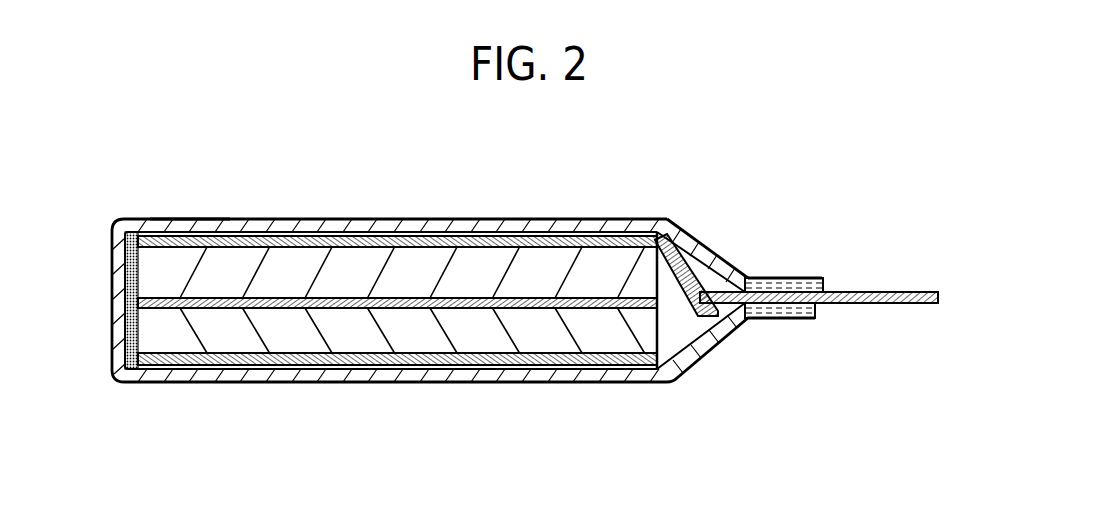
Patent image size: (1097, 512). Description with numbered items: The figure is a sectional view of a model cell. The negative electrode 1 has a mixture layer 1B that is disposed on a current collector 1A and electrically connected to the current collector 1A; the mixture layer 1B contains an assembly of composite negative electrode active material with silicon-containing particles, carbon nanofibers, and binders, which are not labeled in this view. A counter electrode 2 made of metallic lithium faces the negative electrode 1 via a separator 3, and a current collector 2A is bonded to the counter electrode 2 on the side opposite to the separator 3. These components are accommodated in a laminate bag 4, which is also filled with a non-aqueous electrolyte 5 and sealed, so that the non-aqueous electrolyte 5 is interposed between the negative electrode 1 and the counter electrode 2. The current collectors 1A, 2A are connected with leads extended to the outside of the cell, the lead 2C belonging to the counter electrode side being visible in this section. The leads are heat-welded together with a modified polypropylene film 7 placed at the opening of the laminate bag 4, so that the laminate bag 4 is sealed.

The negative electrode 1 is at (397, 326).
The current collector 1A is at (446, 340).
The mixture layer 1B is at (524, 338).
The counter electrode 2 is at (400, 260).
The current collector 2A is at (192, 219).
The lead 2C is at (914, 292).
The separator 3 is at (215, 310).
The laminate bag 4 is at (606, 221).
The non-aqueous electrolyte 5 is at (133, 345).
The modified polypropylene film 7 is at (818, 287).